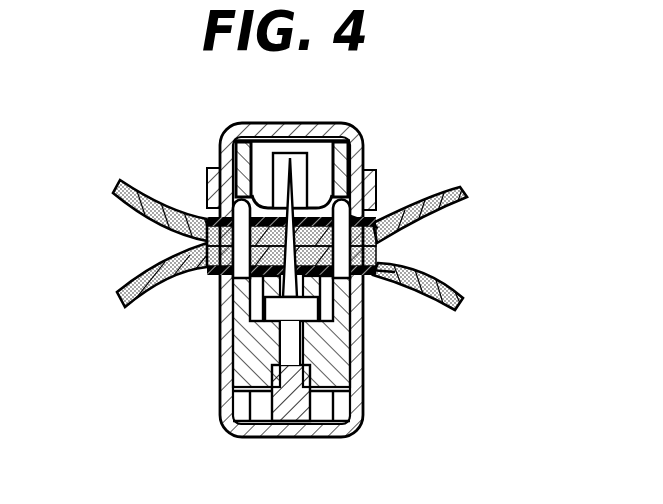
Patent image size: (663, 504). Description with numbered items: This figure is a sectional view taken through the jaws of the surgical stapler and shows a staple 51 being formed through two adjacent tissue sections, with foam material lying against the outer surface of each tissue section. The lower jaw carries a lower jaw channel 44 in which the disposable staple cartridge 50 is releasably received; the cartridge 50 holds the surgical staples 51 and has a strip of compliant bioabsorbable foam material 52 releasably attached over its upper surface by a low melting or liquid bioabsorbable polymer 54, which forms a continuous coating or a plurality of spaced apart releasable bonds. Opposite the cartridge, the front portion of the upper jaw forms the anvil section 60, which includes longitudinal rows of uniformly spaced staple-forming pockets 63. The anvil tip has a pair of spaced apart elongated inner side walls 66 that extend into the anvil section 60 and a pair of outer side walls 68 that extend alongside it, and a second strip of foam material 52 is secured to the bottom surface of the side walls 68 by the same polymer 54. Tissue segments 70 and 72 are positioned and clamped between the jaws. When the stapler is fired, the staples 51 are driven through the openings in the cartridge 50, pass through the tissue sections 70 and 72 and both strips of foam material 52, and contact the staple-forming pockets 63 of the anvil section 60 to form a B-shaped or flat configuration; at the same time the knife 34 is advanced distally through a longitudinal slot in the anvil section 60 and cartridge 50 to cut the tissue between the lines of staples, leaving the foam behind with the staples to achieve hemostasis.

The knife 34 is at (290, 293).
The lower jaw channel 44 is at (356, 421).
The staple cartridge 50 is at (245, 350).
The surgical staples 51 is at (236, 279).
The strip of compliant bioabsorbable foam material 52 is at (414, 246).
The low melting or liquid bioabsorbable polymer 54 is at (212, 210).
The anvil section 60 is at (226, 132).
The staple-forming pockets 63 is at (213, 181).
The inner side walls 66 is at (323, 142).
The outer side walls 68 is at (205, 172).
The tissue segment 70 is at (463, 192).
The tissue segment 72 is at (464, 312).